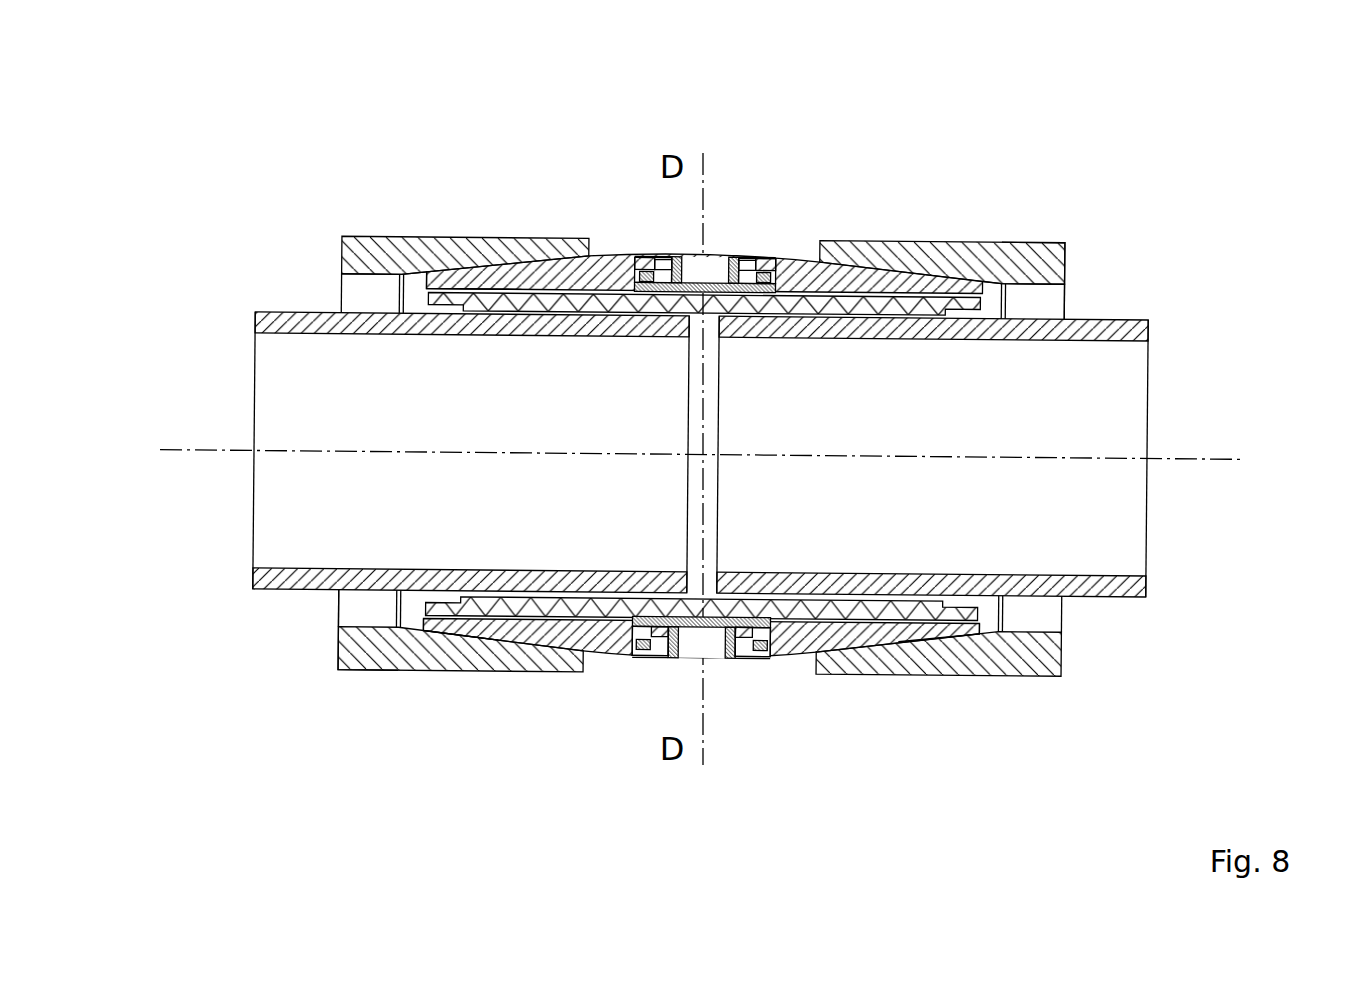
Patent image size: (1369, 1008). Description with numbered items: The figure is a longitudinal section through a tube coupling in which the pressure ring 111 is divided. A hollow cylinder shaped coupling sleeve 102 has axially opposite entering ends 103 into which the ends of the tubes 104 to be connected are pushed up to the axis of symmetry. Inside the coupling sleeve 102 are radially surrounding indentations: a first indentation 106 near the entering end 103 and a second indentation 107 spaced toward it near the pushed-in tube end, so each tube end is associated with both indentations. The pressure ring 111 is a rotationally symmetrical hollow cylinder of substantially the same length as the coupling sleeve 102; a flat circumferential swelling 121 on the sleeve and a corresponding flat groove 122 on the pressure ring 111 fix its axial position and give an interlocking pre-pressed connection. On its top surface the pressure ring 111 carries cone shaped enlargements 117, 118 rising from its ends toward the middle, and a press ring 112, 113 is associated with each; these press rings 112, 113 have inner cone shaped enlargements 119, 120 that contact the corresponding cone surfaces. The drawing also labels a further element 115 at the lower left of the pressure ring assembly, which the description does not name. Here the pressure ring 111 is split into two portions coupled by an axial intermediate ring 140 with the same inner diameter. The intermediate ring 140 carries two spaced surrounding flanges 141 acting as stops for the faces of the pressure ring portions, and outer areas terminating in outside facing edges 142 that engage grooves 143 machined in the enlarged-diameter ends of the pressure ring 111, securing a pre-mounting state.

The tube 104 is at (262, 312).
The flat circumferential swelling 121 is at (372, 272).
The flat groove 122 is at (406, 276).
The press ring 112 is at (505, 256).
The pressure ring 111 is at (497, 253).
The outside facing edge 142 is at (618, 275).
The surrounding flange 141 is at (668, 257).
The intermediate ring 140 is at (710, 286).
The second indentation 107 is at (900, 265).
The coupling sleeve 102 is at (950, 265).
The first indentation 106 is at (1028, 253).
The press ring 113 is at (1060, 250).
The cone shaped enlargement 119 is at (342, 663).
The entering end 103 is at (402, 650).
The sleeve end portion 115 is at (447, 640).
The cone shaped enlargement 117 is at (607, 653).
The groove 143 is at (641, 655).
The cone shaped enlargement 118 is at (792, 655).
The cone shaped enlargement 120 is at (956, 648).